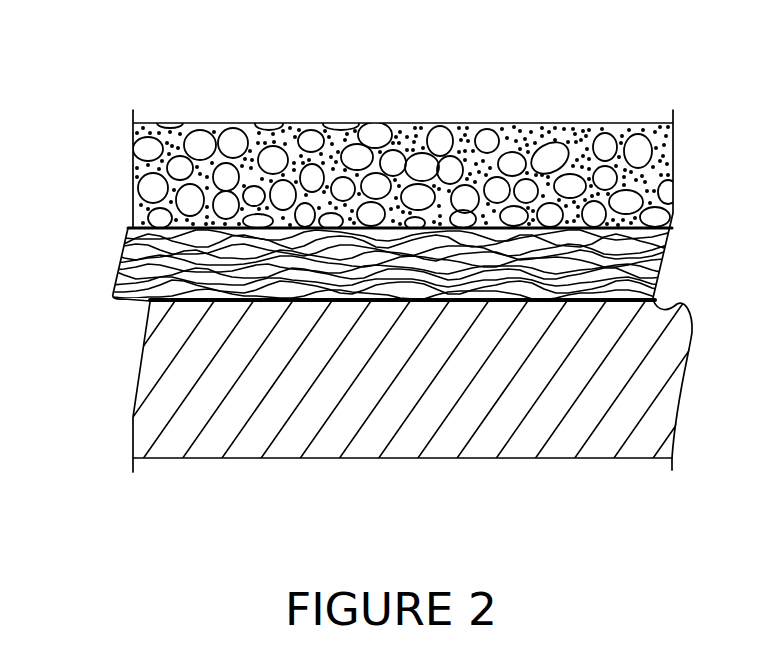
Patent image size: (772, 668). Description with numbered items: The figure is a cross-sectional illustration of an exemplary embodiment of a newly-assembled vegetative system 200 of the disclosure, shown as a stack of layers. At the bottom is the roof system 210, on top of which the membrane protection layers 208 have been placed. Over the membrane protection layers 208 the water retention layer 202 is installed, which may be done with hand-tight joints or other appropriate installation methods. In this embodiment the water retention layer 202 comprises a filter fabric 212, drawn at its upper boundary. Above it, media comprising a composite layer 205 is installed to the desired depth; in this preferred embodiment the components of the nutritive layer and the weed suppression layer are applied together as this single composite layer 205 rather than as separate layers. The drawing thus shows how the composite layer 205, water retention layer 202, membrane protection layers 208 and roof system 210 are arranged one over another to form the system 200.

The system 200 is at (127, 54).
The composite layer 205 is at (142, 189).
The filter fabric 212 is at (130, 228).
The water retention layer 202 is at (126, 257).
The membrane protection layers 208 is at (148, 307).
The roof system 210 is at (153, 391).